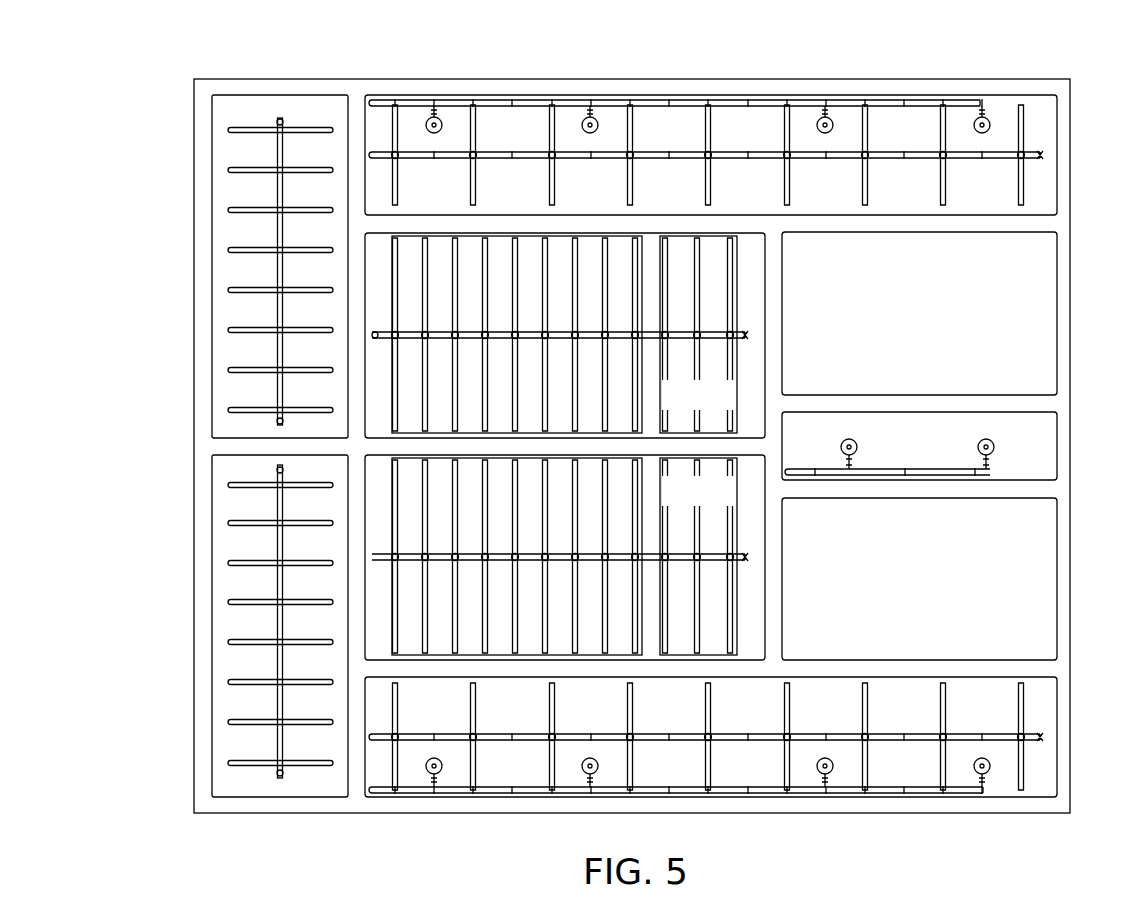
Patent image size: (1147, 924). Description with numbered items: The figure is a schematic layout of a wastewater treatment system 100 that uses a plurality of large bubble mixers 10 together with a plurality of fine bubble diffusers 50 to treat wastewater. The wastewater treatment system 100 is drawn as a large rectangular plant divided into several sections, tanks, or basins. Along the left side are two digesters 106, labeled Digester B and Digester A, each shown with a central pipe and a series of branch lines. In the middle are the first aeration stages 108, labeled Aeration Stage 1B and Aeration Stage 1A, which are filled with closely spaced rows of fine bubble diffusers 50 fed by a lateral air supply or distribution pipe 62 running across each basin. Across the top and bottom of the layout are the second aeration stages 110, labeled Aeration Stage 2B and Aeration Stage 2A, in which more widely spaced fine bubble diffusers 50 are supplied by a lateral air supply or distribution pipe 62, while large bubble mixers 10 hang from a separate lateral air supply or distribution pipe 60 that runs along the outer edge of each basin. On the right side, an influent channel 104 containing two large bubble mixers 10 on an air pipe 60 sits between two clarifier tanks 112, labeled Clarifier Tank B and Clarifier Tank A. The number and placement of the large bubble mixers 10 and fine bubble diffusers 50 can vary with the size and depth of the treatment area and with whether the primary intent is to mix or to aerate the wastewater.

The wastewater treatment system 100 is at (148, 60).
The digester 106 is at (224, 192).
The first aeration stage 108 is at (747, 366).
The clarifier tank 112 is at (1045, 322).
The influent channel 104 is at (1037, 447).
The second aeration stage 110 is at (886, 117).
The lateral air supply or distribution pipe 60 is at (451, 103).
The lateral air supply or distribution pipe 62 is at (505, 157).
The fine bubble diffuser 50 is at (478, 190).
The large bubble mixer 10 is at (440, 132).